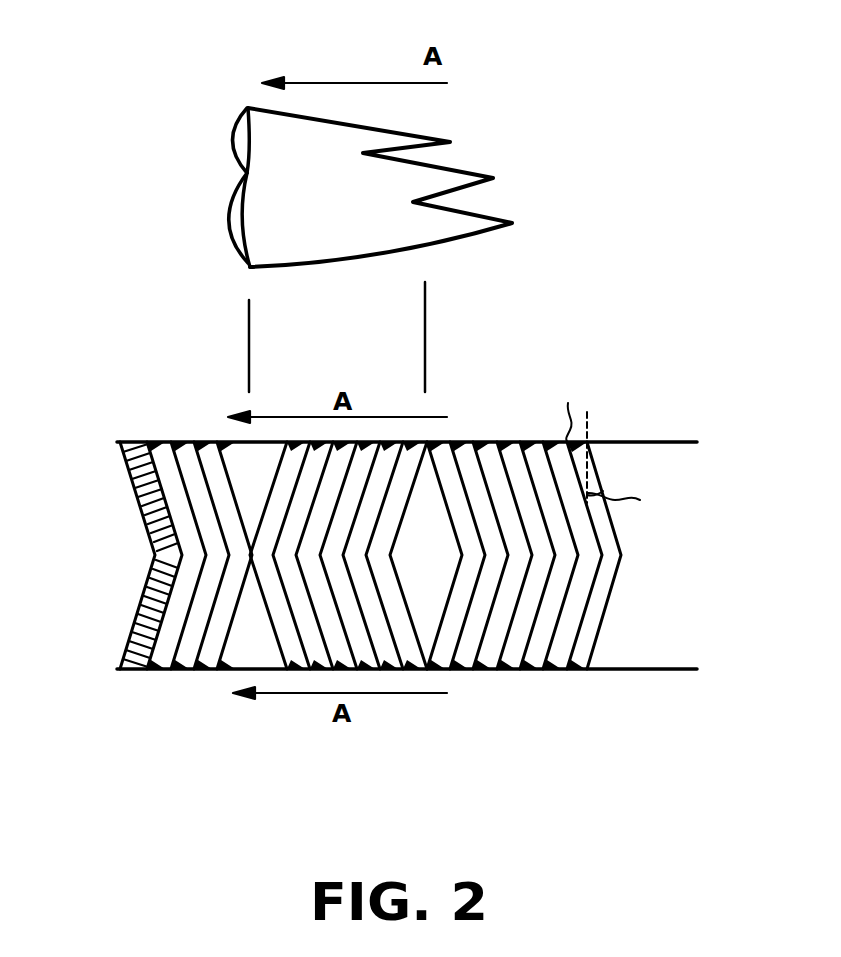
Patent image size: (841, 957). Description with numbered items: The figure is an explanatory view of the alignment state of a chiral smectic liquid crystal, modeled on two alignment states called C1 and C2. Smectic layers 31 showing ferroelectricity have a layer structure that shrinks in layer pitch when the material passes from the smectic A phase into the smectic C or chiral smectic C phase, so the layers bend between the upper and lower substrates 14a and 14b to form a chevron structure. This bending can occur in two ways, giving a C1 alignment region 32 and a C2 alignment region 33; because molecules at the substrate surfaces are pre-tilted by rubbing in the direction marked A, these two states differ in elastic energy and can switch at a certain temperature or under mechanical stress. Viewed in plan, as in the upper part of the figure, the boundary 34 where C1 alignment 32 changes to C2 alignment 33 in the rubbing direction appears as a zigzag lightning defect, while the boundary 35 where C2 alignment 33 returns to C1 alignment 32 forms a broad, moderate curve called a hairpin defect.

The upper substrate 14a is at (673, 442).
The lower substrate 14b is at (667, 672).
The smectic layer 31 is at (406, 587).
The C1 alignment region 32 is at (243, 742).
The C2 alignment region 33 is at (427, 742).
The boundary of transition from C1 alignment to C2 alignment 34 is at (413, 135).
The boundary of transition from C2 alignment to C1 alignment 35 is at (227, 147).